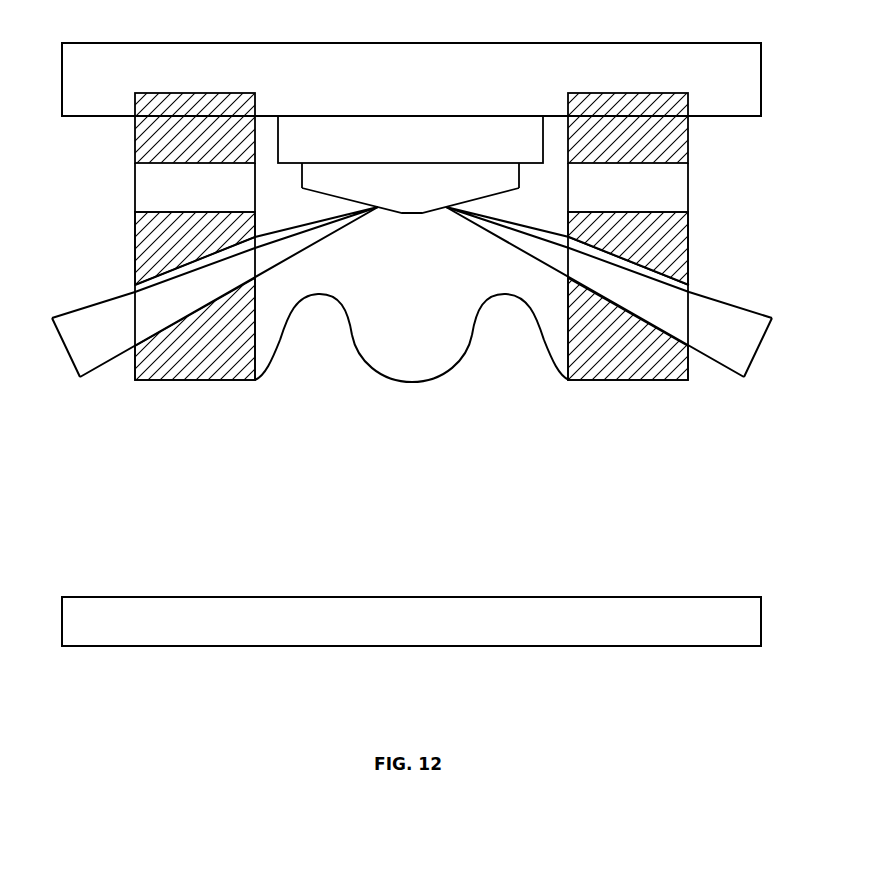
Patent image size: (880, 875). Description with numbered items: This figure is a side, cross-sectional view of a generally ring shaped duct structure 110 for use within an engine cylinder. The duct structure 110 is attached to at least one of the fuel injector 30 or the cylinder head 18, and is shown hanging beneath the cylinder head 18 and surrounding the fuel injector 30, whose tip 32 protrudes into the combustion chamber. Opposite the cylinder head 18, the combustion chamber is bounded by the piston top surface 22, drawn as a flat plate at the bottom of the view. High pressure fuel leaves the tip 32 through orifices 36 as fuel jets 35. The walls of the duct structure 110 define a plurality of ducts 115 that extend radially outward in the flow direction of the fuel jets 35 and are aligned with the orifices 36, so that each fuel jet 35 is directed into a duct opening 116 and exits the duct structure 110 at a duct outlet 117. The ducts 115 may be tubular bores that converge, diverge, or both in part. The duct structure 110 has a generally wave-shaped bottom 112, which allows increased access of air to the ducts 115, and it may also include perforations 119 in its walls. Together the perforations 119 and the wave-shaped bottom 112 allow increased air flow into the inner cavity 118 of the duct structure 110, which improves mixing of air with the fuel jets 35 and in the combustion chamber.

The cylinder head 18 is at (555, 68).
The piston top surface 22 is at (400, 596).
The fuel injector 30 is at (429, 133).
The tip 32 is at (398, 195).
The orifices 36 is at (375, 205).
The fuel jets 35 is at (97, 332).
The duct structure 110 is at (660, 230).
The perforations 119 is at (143, 187).
The ducts 115 is at (228, 308).
The duct outlets 117 is at (145, 347).
The duct openings 116 is at (250, 293).
The inner cavity 118 is at (365, 252).
The wave-shaped bottom 112 is at (412, 382).